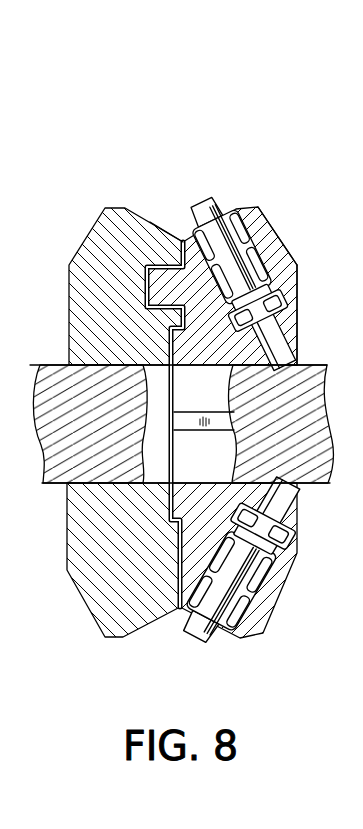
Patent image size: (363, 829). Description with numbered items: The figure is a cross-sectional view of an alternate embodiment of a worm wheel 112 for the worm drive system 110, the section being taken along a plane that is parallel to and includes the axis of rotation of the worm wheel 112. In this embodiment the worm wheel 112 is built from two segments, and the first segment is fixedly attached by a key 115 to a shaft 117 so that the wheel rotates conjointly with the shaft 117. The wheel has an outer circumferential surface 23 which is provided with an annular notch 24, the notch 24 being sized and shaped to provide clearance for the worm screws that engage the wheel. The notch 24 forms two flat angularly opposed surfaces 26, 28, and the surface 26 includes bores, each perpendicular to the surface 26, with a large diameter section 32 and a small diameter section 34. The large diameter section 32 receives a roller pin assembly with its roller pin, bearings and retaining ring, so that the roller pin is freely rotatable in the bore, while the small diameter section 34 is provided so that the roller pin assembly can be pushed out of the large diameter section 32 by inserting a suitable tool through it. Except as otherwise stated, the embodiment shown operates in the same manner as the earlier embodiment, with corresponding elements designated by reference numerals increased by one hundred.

The worm drive system 110 is at (169, 130).
The outer circumferential surface 23 is at (115, 208).
The flat angularly opposed surface 26 is at (150, 220).
The annular notch 24 is at (181, 205).
The flat angularly opposed surface 28 is at (238, 207).
The large diameter section 32 is at (281, 236).
The small diameter section 34 is at (298, 308).
The worm wheel 112 is at (61, 576).
The shaft 117 is at (317, 392).
The key 115 is at (222, 424).